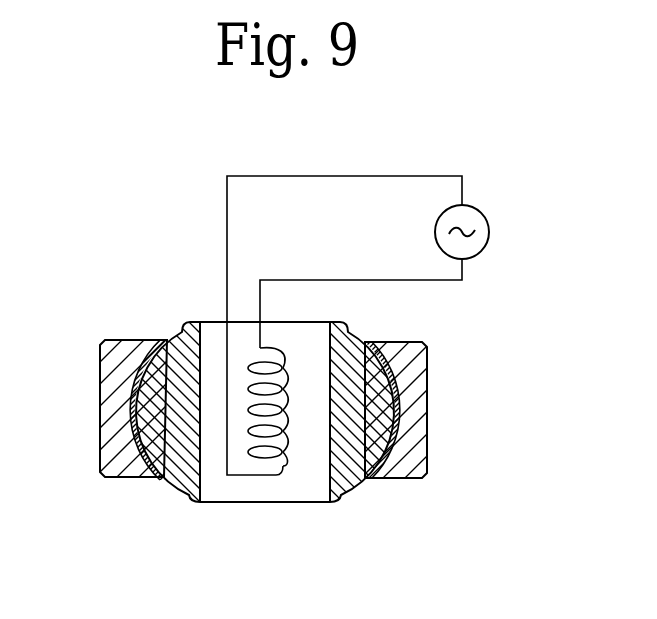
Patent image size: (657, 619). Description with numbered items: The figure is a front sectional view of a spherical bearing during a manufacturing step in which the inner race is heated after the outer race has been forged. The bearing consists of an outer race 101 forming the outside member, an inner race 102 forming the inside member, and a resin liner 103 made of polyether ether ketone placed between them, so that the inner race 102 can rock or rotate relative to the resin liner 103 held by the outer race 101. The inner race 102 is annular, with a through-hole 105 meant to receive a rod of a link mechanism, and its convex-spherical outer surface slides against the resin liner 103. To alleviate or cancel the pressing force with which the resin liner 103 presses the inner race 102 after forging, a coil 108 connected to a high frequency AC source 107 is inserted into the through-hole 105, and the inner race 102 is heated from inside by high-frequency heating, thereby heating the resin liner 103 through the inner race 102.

The outer race 101 is at (418, 373).
The inner race 102 is at (172, 316).
The resin liner 103 is at (131, 454).
The through-hole 105 is at (213, 482).
The high frequency AC source 107 is at (480, 210).
The coil 108 is at (283, 467).